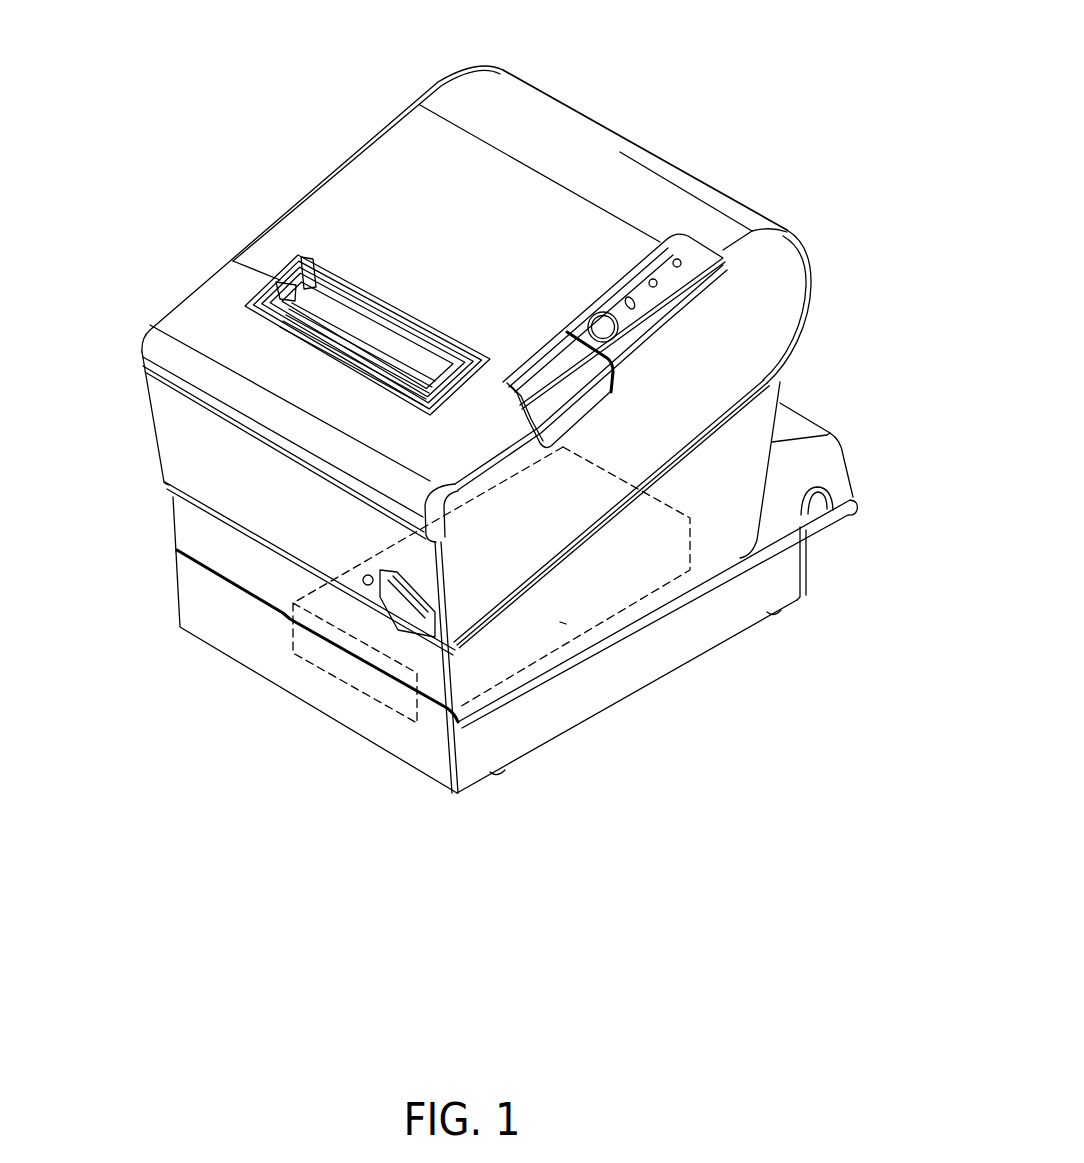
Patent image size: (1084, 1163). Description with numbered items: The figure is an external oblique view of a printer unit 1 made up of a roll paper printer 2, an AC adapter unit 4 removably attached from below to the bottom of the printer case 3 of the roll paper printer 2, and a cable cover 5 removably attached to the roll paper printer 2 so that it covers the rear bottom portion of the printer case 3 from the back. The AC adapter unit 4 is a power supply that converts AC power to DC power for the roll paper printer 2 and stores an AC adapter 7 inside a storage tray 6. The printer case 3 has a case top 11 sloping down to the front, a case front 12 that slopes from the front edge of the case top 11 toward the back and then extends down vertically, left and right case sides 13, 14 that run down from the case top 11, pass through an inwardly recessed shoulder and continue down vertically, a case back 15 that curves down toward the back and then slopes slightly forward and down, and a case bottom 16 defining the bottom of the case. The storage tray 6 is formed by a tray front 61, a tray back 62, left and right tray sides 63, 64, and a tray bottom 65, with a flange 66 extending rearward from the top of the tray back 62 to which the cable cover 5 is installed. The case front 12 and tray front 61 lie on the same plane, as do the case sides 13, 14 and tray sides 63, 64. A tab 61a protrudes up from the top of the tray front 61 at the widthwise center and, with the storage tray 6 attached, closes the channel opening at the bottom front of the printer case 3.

The printer unit 1 is at (747, 68).
The roll paper printer 2 is at (585, 162).
The printer case 3 is at (360, 180).
The AC adapter unit 4 is at (383, 696).
The cable cover 5 is at (784, 502).
The storage tray 6 is at (203, 625).
The AC adapter 7 is at (562, 622).
The case top 11 is at (290, 240).
The case front 12 is at (197, 473).
The left case side 13 is at (160, 305).
The right case side 14 is at (640, 535).
The case back 15 is at (812, 282).
The case bottom 16 is at (503, 703).
The tray front 61 is at (243, 652).
The tab 61a is at (308, 637).
The tray back 62 is at (808, 563).
The left tray side 63 is at (178, 578).
The right tray side 64 is at (545, 718).
The tray bottom 65 is at (628, 703).
The flange 66 is at (833, 515).